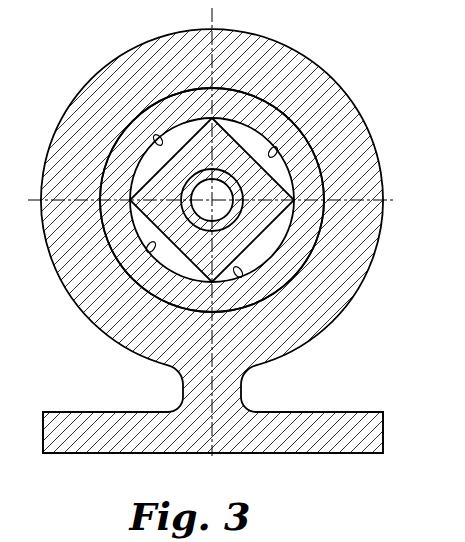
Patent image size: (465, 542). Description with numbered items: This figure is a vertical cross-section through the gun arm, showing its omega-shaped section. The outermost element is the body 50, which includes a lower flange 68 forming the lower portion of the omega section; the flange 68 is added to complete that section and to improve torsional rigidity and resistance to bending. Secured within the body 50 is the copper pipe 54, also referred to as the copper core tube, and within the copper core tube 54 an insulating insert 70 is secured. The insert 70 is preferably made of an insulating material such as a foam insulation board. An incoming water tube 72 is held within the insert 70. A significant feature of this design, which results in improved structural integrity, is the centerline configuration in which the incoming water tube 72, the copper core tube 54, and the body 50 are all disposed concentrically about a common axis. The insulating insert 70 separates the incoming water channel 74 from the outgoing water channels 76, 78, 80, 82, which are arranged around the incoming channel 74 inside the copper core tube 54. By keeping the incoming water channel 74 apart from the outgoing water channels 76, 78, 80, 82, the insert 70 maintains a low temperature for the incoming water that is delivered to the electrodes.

The body 50 is at (355, 268).
The copper pipe 54 is at (317, 215).
The lower flange 68 is at (345, 408).
The insulating insert 70 is at (342, 132).
The incoming water tube 72 is at (272, 153).
The incoming water channel 74 is at (133, 160).
The outgoing water channel 76 is at (137, 117).
The outgoing water channel 78 is at (152, 266).
The outgoing water channel 80 is at (240, 272).
The outgoing water channel 82 is at (290, 196).